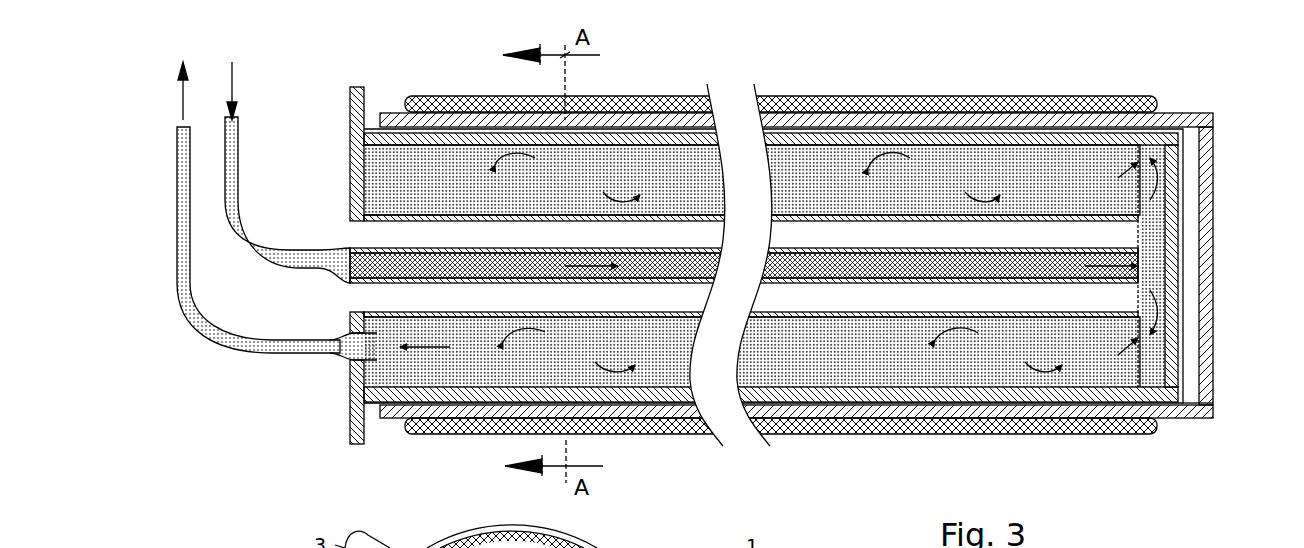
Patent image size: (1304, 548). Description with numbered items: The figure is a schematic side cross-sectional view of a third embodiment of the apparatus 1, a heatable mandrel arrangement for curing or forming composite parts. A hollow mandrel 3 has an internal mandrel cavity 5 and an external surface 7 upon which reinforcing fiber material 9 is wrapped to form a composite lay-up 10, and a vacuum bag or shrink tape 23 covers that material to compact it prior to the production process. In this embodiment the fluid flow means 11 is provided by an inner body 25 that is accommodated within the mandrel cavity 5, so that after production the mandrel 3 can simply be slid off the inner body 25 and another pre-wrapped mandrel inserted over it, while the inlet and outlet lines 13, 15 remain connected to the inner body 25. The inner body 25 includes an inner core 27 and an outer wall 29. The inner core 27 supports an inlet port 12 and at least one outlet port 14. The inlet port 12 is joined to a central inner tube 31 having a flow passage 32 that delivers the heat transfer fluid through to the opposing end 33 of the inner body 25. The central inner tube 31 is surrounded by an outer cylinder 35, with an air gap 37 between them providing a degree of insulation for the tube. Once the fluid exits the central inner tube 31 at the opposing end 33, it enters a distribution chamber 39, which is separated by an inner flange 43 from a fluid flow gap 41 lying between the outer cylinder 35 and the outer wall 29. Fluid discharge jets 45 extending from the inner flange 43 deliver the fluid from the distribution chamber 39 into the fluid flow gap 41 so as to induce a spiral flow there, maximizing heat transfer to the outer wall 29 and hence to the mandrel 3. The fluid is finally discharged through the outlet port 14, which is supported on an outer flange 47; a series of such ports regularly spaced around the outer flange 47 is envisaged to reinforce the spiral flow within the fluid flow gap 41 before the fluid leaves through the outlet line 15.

The apparatus 1 is at (185, 430).
The mandrel 3 is at (1222, 208).
The mandrel cavity 5 is at (1190, 366).
The external surface 7 is at (1173, 100).
The reinforcing fiber material 9 is at (905, 120).
The composite lay-up 10 is at (950, 95).
The fluid flow means 11 is at (300, 224).
The inlet port 12 is at (333, 268).
The inlet line 13 is at (248, 235).
The outlet port 14 is at (328, 357).
The outlet line 15 is at (190, 303).
The vacuum bag or shrink tape 23 is at (680, 95).
The inner body 25 is at (343, 150).
The inner core 27 is at (474, 210).
The outer wall 29 is at (856, 135).
The central inner tube 31 is at (672, 248).
The flow passage 32 is at (828, 248).
The opposing end 33 is at (1140, 284).
The outer cylinder 35 is at (1043, 240).
The air gap 37 is at (880, 300).
The distribution chamber 39 is at (1158, 418).
The fluid flow gap 41 is at (828, 365).
The inner flange 43 is at (1120, 420).
The fluid discharge jets 45 is at (1120, 180).
The outer flange 47 is at (350, 413).